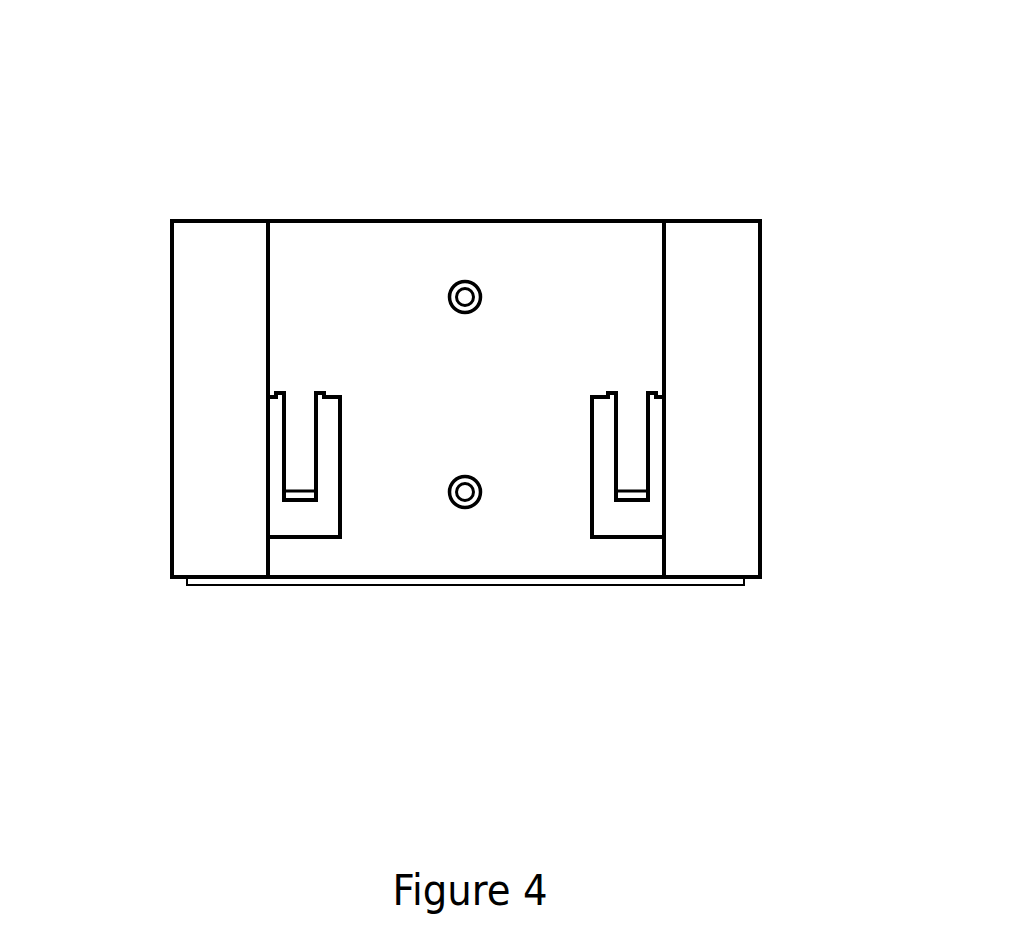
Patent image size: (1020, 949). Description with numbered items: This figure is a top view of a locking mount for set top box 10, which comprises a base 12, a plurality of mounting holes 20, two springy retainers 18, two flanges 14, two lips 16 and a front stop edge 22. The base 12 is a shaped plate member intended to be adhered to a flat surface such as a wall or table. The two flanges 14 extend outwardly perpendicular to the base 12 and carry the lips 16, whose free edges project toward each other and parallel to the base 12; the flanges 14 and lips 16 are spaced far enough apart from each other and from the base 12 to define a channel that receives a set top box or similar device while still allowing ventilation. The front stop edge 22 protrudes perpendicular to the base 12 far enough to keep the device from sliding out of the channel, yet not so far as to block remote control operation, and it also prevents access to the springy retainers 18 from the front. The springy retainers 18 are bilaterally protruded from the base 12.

The locking mount for set top box 10 is at (757, 133).
The base 12 is at (347, 243).
The flange 14 is at (167, 402).
The lip 16 is at (195, 290).
The springy retainer 18 is at (303, 466).
The mounting hole 20 is at (466, 292).
The front stop edge 22 is at (500, 585).